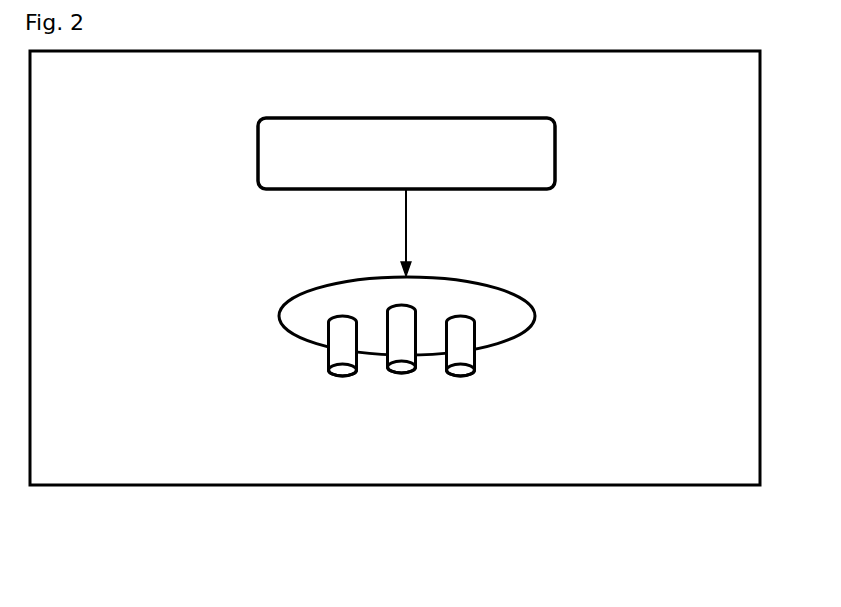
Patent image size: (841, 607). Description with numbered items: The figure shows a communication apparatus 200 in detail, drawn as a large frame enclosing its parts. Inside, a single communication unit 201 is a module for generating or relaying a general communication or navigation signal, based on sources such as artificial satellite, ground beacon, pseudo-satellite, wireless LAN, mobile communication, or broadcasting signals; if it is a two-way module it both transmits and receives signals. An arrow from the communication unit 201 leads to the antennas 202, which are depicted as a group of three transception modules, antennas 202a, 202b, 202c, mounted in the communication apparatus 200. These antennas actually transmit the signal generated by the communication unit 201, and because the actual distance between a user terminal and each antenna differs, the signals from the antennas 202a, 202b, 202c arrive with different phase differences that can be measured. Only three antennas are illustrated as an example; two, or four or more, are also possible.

The communication apparatus 200 is at (473, 486).
The communication unit 201 is at (258, 165).
The antennas 202 is at (492, 280).
The antenna 202a is at (325, 358).
The antenna 202b is at (397, 374).
The antenna 202c is at (482, 368).